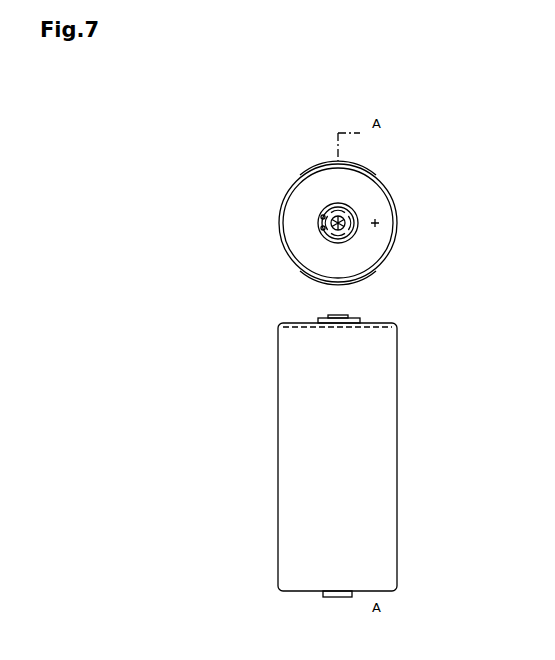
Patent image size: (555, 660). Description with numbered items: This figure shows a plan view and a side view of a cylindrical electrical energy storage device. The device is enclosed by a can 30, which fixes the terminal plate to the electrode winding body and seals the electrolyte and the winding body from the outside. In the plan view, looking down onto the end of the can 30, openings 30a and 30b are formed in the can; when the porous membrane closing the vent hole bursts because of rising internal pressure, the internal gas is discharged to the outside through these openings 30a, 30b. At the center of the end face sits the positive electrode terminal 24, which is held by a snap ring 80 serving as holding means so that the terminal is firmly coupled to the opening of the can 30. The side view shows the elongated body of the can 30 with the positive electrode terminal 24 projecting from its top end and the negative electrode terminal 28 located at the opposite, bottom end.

The can 30 is at (397, 222).
The opening 30a is at (338, 252).
The opening 30b is at (338, 193).
The snap ring 80 is at (320, 220).
The positive electrode terminal 24 is at (322, 243).
The negative electrode terminal 28 is at (327, 597).